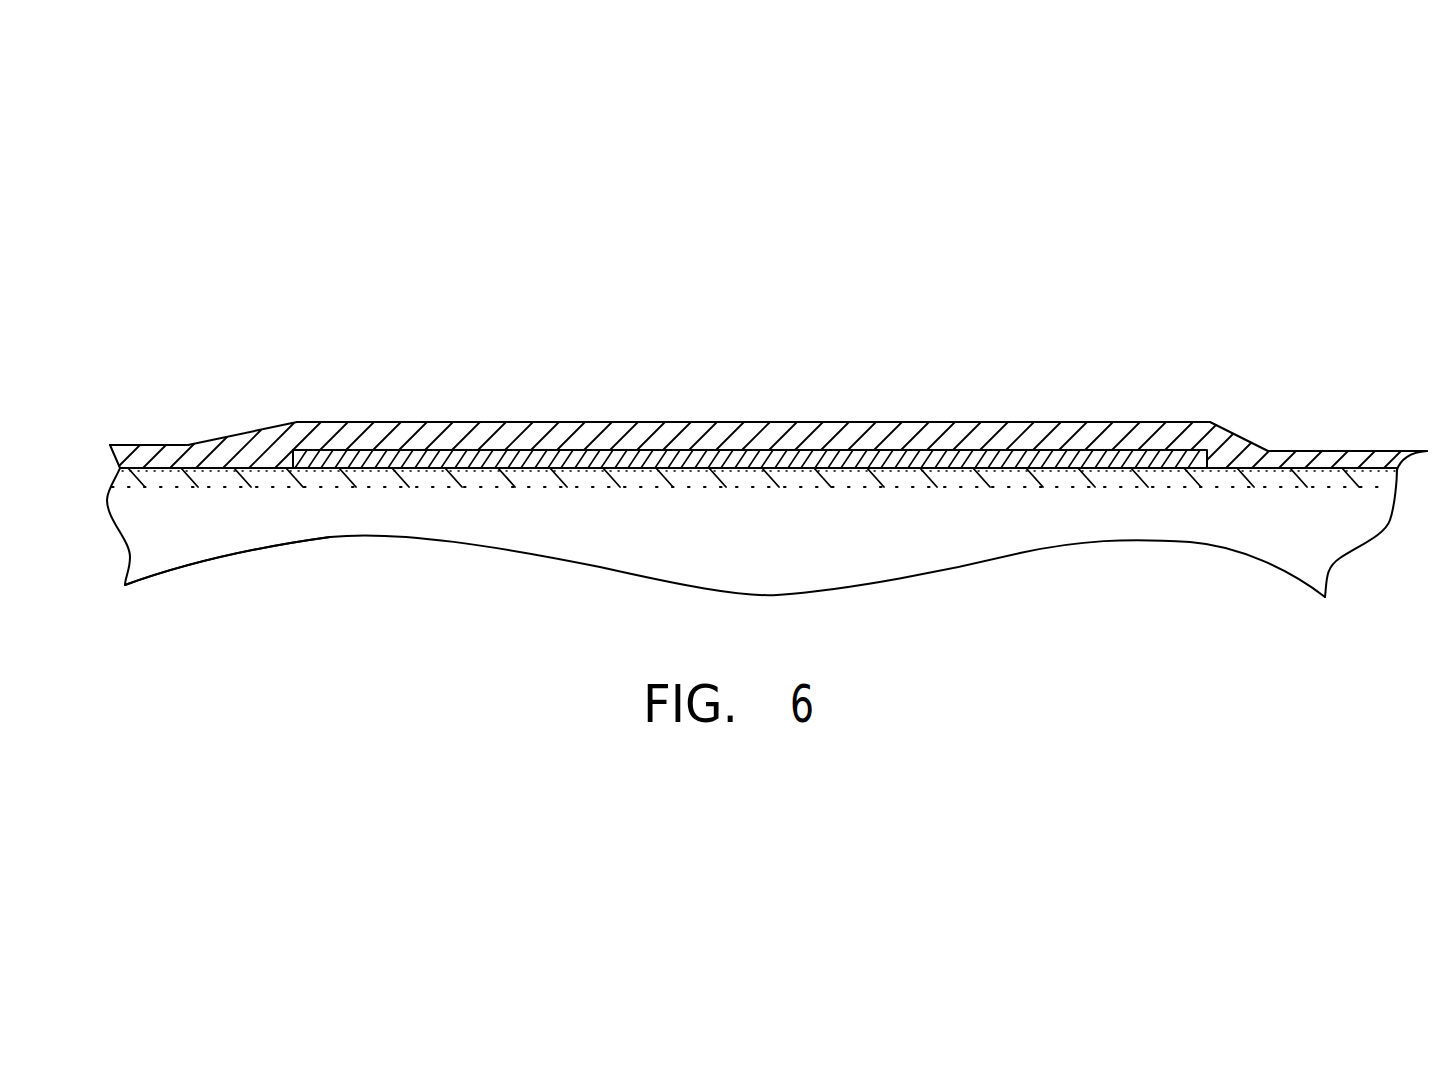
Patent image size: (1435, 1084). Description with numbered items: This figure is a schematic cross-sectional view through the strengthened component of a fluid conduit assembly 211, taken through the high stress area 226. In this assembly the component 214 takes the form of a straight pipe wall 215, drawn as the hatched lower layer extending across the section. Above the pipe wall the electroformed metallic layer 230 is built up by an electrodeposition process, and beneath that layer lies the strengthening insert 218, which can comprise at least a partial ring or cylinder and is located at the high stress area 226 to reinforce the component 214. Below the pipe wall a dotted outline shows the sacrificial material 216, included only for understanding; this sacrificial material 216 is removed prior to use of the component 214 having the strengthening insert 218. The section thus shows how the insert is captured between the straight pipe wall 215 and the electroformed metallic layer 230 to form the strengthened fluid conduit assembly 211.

The fluid conduit assembly 211 is at (724, 301).
The component 214 is at (883, 386).
The straight pipe wall 215 is at (771, 369).
The sacrificial material 216 is at (1107, 487).
The strengthening insert 218 is at (408, 450).
The high stress area 226 is at (1008, 411).
The electroformed metallic layer 230 is at (530, 438).